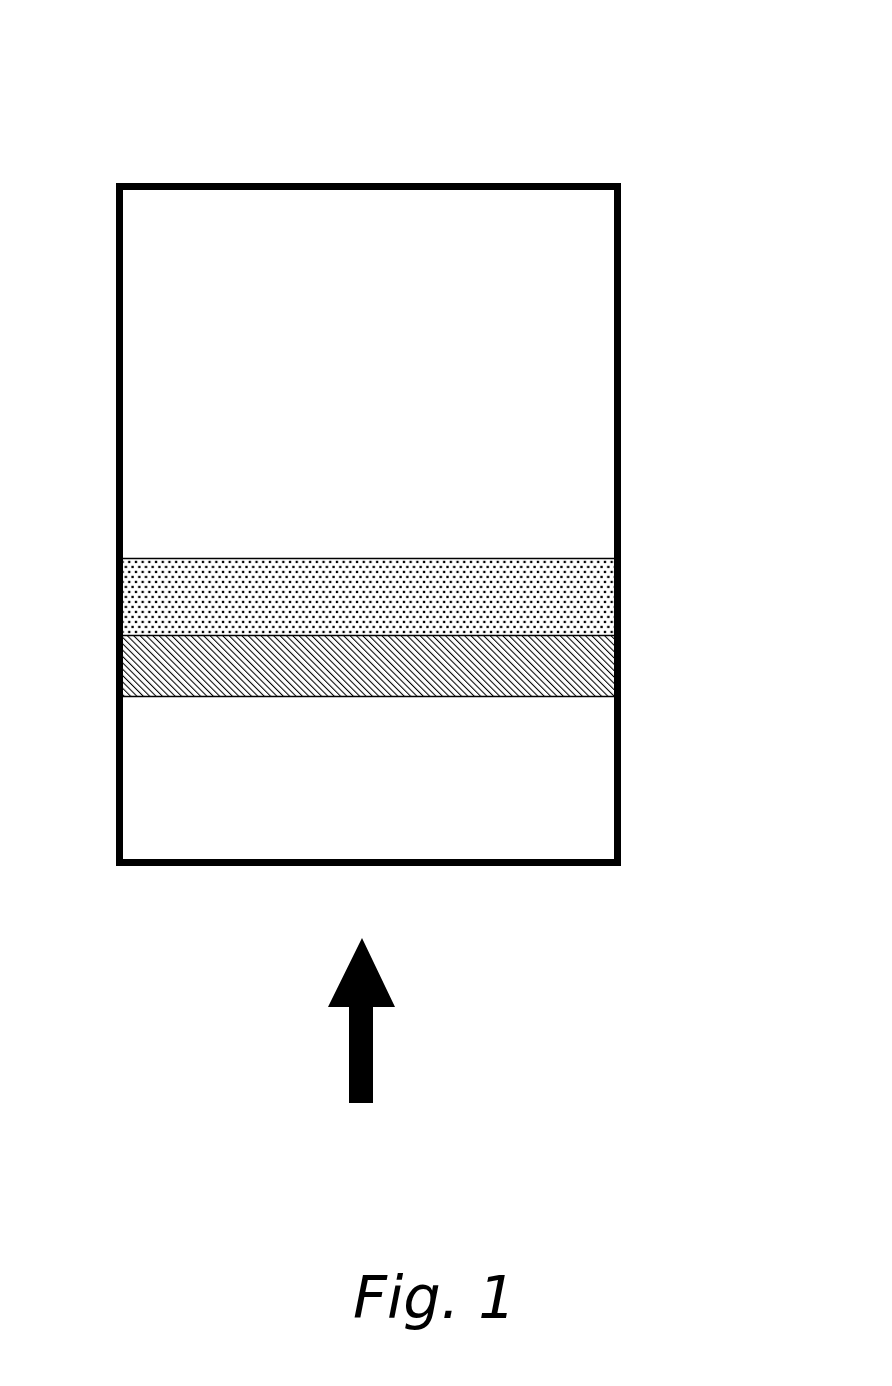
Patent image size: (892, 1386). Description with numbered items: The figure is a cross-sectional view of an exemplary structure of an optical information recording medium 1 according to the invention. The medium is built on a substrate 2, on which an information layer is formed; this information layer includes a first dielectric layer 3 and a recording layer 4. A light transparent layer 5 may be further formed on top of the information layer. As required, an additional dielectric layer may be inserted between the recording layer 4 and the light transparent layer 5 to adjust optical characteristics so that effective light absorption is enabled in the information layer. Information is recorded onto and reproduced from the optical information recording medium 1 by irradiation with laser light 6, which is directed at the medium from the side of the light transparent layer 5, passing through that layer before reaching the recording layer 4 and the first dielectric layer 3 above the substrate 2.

The optical information recording medium 1 is at (534, 125).
The substrate 2 is at (553, 378).
The first dielectric layer 3 is at (558, 590).
The recording layer 4 is at (560, 663).
The light transparent layer 5 is at (559, 787).
The laser light 6 is at (384, 1020).